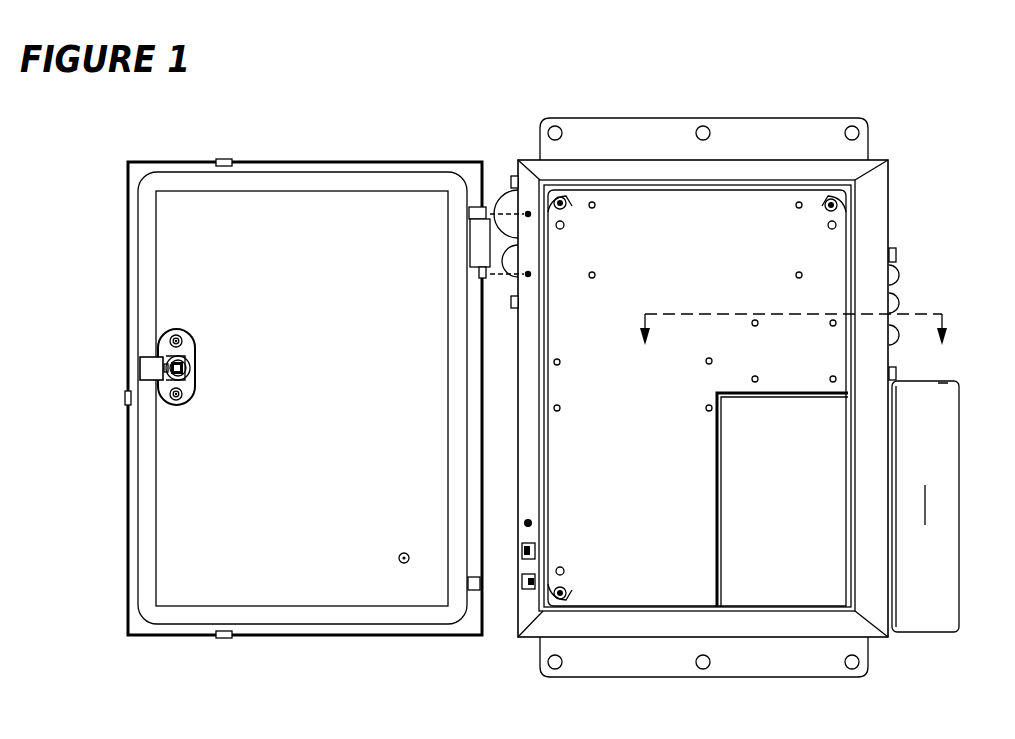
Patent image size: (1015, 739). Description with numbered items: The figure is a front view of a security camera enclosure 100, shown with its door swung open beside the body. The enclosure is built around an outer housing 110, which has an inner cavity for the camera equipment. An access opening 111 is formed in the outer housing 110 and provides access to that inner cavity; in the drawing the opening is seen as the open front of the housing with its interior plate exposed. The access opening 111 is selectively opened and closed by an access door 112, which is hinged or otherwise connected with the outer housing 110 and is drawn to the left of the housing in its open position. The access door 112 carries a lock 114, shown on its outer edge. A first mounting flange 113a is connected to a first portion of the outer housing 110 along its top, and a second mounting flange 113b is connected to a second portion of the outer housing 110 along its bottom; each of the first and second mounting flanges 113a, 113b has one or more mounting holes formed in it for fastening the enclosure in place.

The security camera enclosure 100 is at (505, 401).
The outer housing 110 is at (906, 147).
The access opening 111 is at (548, 616).
The access door 112 is at (325, 160).
The first mounting flange 113a is at (635, 118).
The second mounting flange 113b is at (776, 678).
The lock 114 is at (147, 357).